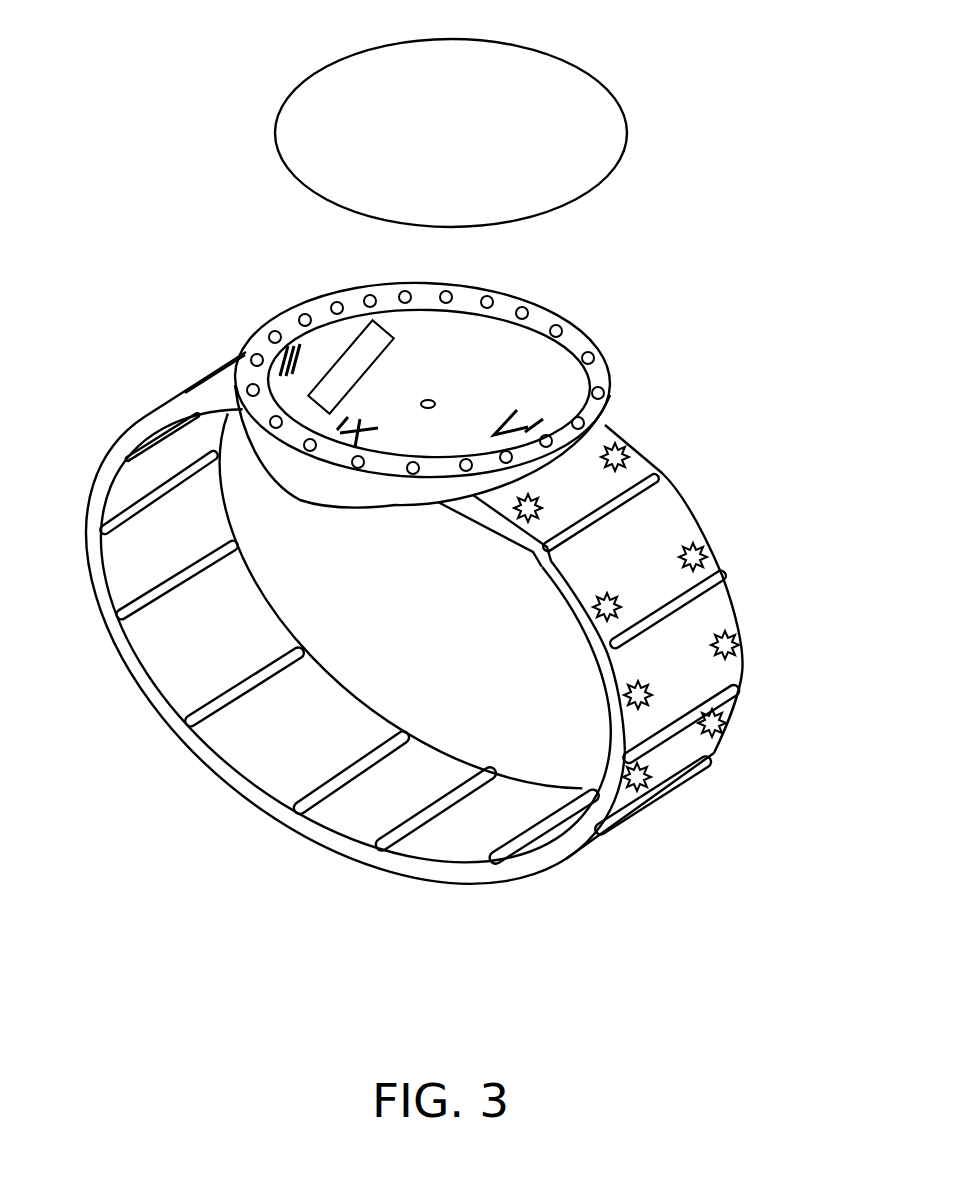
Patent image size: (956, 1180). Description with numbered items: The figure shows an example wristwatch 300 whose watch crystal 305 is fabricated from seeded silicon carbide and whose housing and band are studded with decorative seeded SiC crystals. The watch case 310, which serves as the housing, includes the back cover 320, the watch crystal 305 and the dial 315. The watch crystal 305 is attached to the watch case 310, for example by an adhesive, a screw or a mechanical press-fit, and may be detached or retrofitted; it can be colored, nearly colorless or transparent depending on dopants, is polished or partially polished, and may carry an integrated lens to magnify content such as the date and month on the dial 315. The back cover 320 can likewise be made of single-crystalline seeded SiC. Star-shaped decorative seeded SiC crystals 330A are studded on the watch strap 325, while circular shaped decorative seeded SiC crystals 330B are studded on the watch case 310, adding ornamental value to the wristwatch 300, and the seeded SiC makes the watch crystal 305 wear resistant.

The wristwatch 300 is at (580, 993).
The watch crystal 305 is at (593, 78).
The watch case 310 is at (549, 312).
The dial 315 is at (555, 377).
The back cover 320 is at (343, 503).
The watch strap 325 is at (697, 530).
The star-shaped decorative seeded SiC crystals 330A is at (706, 632).
The circular shaped decorative seeded SiC crystals 330B is at (561, 330).